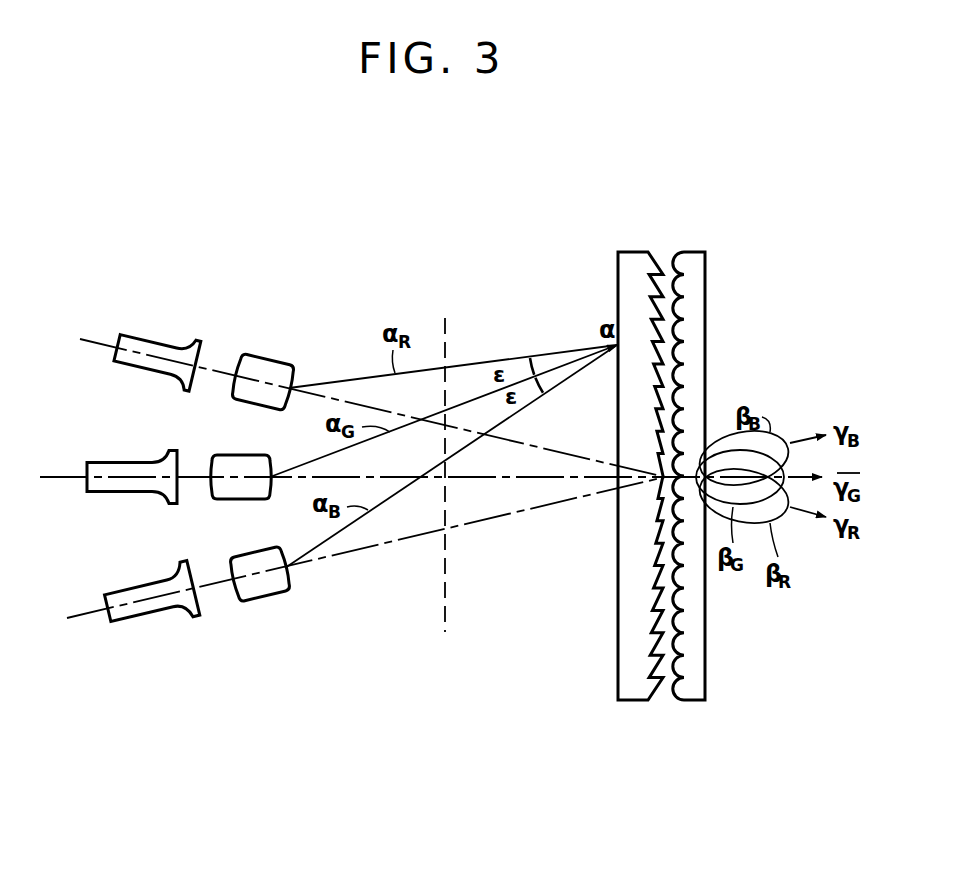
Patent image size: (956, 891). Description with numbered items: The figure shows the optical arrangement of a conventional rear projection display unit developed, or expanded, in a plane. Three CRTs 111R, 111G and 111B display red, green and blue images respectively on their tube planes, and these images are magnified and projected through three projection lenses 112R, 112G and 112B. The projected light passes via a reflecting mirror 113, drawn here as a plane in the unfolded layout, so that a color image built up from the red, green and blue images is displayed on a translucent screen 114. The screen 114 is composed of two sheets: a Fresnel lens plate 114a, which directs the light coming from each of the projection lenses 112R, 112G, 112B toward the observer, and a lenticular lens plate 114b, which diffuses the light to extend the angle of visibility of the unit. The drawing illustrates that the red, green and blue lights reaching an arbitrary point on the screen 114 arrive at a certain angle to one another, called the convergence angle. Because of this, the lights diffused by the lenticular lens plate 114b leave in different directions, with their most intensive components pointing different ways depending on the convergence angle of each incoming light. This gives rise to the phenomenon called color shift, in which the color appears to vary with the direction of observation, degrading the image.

The CRT 111R is at (153, 337).
The projection lens 112R is at (270, 358).
The CRT 111G is at (113, 495).
The projection lens 112G is at (233, 500).
The CRT 111B is at (140, 618).
The projection lens 112B is at (270, 595).
The reflecting mirror 113 is at (445, 318).
The translucent screen 114 is at (660, 477).
The Fresnel lens plate 114a is at (627, 702).
The lenticular lens plate 114b is at (693, 702).